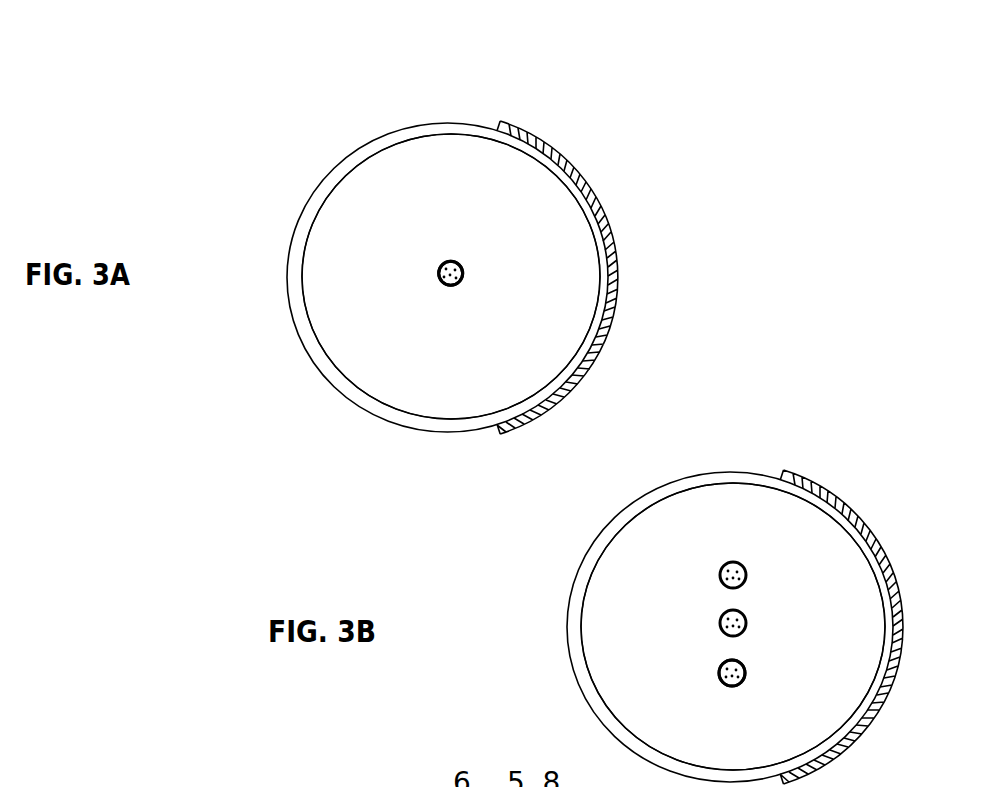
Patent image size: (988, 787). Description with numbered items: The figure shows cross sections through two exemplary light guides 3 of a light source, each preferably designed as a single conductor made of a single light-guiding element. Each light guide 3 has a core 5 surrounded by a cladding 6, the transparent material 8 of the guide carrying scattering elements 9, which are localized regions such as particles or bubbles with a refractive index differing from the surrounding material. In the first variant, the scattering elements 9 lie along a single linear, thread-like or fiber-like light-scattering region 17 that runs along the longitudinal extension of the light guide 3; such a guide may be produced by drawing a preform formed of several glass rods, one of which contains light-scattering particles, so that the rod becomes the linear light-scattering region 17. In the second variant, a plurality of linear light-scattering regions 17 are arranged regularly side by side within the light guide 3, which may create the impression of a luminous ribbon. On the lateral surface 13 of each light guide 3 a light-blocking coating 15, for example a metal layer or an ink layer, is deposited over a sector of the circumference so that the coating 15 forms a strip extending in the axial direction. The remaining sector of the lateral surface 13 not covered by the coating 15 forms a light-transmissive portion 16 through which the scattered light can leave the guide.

In FIG. 3A, the light guide 3 is at (323, 160).
In FIG. 3B, the light guide 3 is at (597, 530).
In FIG. 3A, the core 5 is at (451, 209).
In FIG. 3B, the core 5 is at (733, 556).
In FIG. 3A, the cladding 6 is at (445, 133).
In FIG. 3B, the cladding 6 is at (728, 483).
In FIG. 3A, the transparent material 8 is at (463, 163).
In FIG. 3B, the transparent material 8 is at (745, 512).
In FIG. 3A, the scattering elements 9 is at (438, 275).
In FIG. 3B, the scattering elements 9 is at (717, 669).
In FIG. 3A, the lateral surface 13 is at (305, 198).
In FIG. 3B, the lateral surface 13 is at (588, 545).
In FIG. 3A, the light-blocking coating 15 is at (598, 190).
In FIG. 3B, the light-blocking coating 15 is at (878, 534).
In FIG. 3A, the light-transmissive portion 16 is at (287, 295).
In FIG. 3B, the light-transmissive portion 16 is at (568, 638).
In FIG. 3A, the light-scattering region 17 is at (440, 262).
In FIG. 3B, the light-scattering region 17 is at (727, 563).